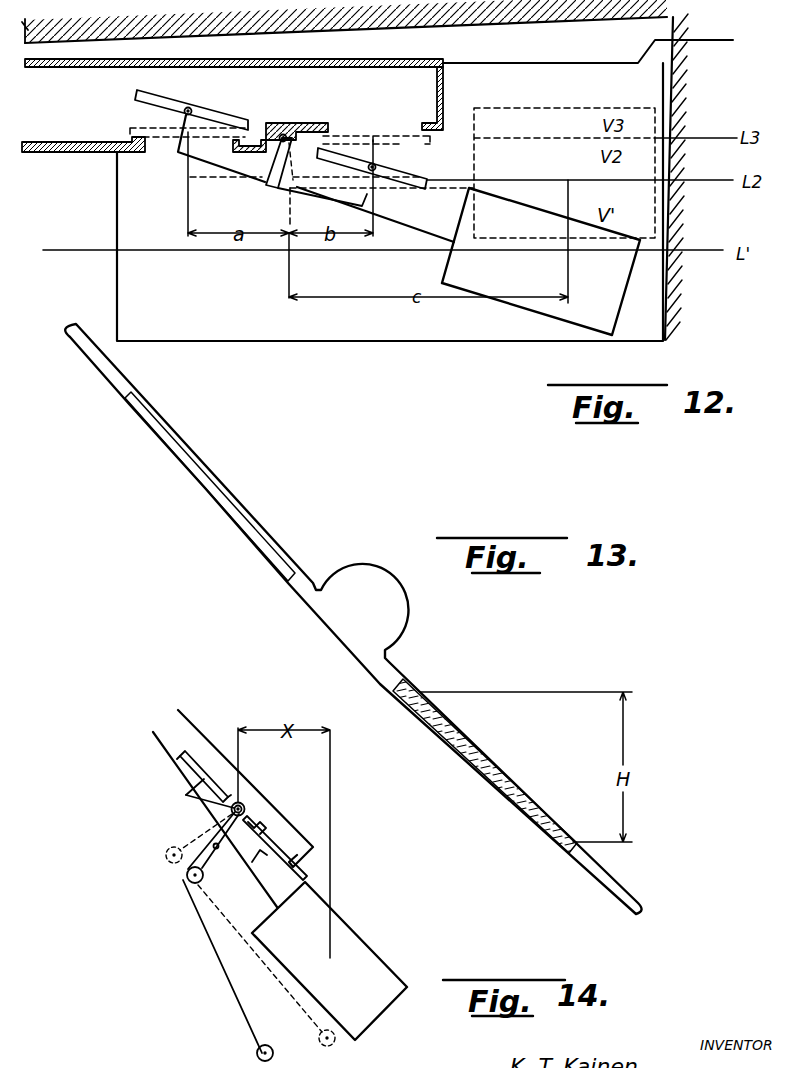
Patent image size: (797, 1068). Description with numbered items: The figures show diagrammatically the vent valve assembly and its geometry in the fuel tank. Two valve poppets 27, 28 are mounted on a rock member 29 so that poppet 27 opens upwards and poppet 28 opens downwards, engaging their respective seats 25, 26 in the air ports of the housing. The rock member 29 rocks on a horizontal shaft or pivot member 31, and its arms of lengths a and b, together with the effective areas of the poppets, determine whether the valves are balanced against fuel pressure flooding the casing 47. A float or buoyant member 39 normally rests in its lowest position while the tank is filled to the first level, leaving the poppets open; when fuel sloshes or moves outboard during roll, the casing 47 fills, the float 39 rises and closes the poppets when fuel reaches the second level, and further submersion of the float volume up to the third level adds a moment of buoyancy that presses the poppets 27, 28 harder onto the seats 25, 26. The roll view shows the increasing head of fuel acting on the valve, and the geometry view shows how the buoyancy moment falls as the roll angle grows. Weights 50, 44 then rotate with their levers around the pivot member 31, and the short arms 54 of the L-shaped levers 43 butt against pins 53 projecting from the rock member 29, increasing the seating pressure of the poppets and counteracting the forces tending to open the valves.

In FIG. 12, the valve seat 25 is at (133, 139).
In FIG. 12, the valve seat 26 is at (420, 131).
In FIG. 12, the valve poppet 27 is at (155, 97).
In FIG. 12, the valve poppet 28 is at (337, 148).
In FIG. 12, the rock member 29 is at (320, 103).
In FIG. 14, the rock member 29 is at (186, 795).
In FIG. 14, the shaft or pivot member 31 is at (244, 807).
In FIG. 12, the float or buoyant member 39 is at (491, 194).
In FIG. 14, the float or buoyant member 39 is at (367, 946).
In FIG. 14, the L-shaped lever 43 is at (226, 840).
In FIG. 14, the weight 44 is at (256, 1050).
In FIG. 12, the casing 47 is at (695, 177).
In FIG. 14, the weight 50 is at (178, 880).
In FIG. 14, the pin 53 is at (278, 836).
In FIG. 14, the short arm 54 is at (212, 848).